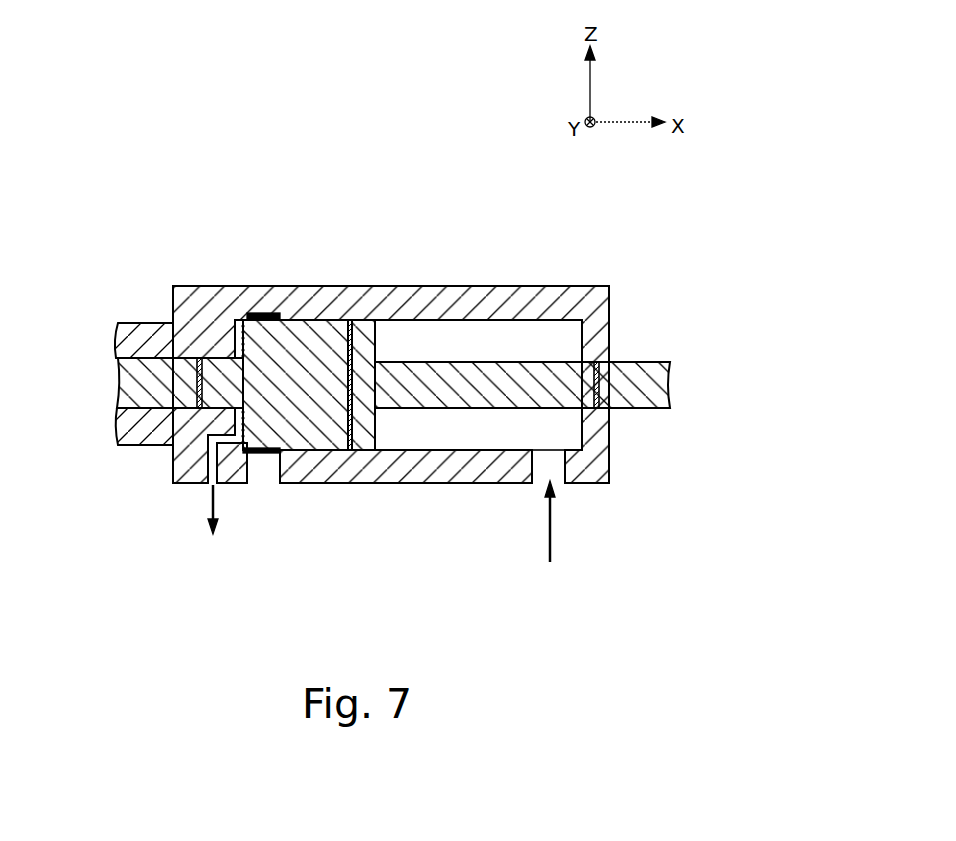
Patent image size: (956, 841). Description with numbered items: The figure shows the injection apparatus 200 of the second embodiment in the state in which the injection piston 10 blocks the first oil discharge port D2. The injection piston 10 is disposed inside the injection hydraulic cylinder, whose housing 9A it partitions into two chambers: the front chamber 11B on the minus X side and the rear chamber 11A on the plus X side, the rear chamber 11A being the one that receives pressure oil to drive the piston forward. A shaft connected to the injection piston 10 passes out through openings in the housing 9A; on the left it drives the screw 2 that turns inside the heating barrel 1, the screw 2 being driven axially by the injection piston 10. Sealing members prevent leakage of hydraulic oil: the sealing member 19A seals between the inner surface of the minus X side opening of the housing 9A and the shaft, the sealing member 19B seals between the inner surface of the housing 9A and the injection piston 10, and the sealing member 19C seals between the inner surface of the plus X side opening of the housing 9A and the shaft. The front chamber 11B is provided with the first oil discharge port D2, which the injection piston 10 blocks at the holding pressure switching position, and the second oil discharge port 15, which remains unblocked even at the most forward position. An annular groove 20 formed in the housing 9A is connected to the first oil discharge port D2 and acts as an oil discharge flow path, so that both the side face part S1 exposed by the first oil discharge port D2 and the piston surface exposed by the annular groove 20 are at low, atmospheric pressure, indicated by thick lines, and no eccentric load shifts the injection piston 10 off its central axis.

The heating barrel 1 is at (128, 323).
The screw 2 is at (118, 374).
The housing 9A is at (508, 296).
The injection piston 10 is at (653, 372).
The rear chamber 11A is at (555, 340).
The front chamber 11B is at (240, 322).
The second oil discharge port 15 is at (203, 494).
The sealing member 19A is at (200, 409).
The sealing member 19B is at (353, 321).
The sealing member 19C is at (598, 396).
The annular groove 20 is at (283, 313).
The injection apparatus 200 is at (362, 116).
The side face part S1 is at (265, 456).
The first oil discharge port D2 is at (283, 494).